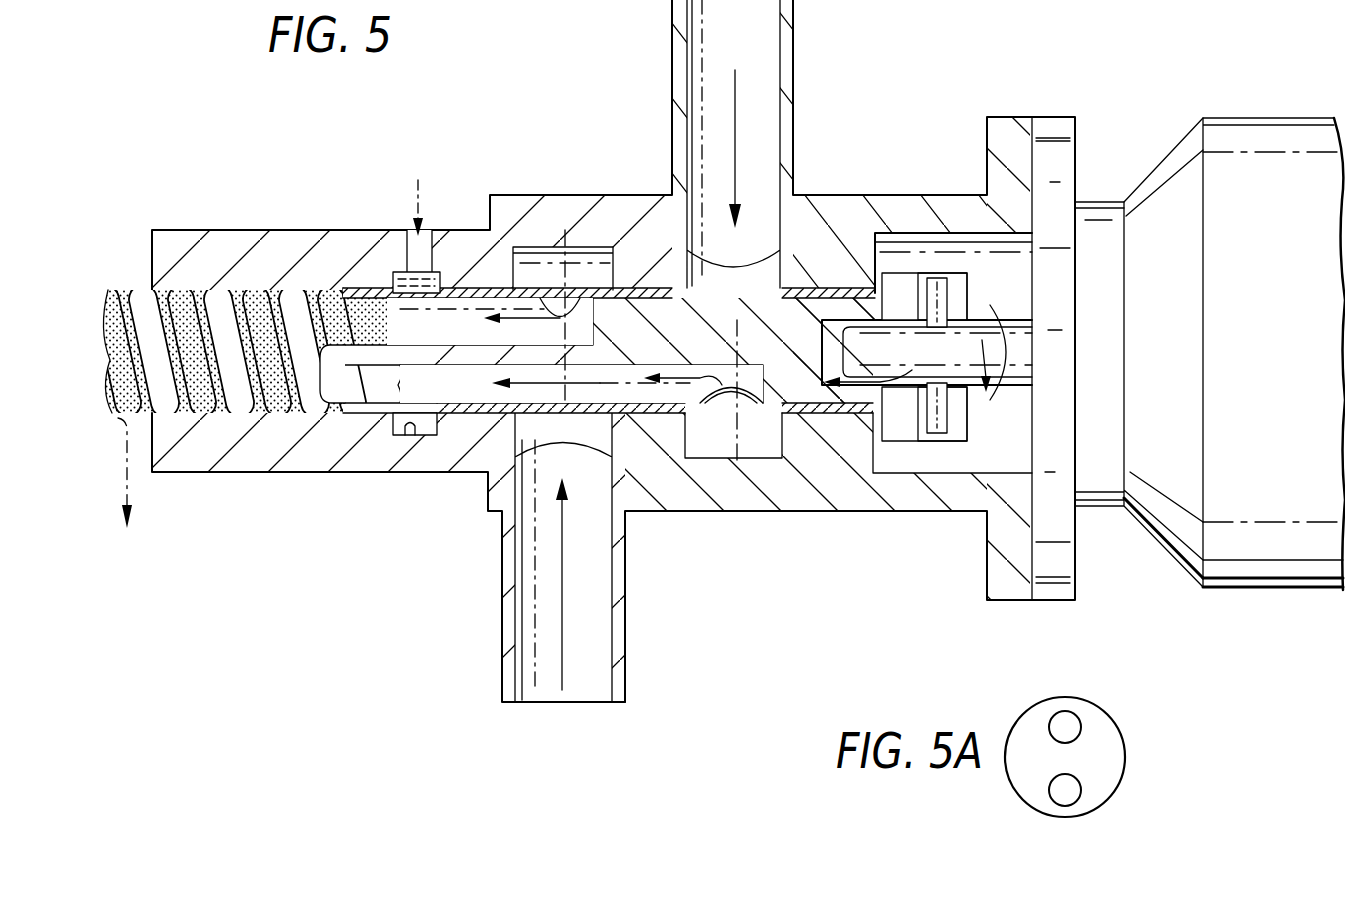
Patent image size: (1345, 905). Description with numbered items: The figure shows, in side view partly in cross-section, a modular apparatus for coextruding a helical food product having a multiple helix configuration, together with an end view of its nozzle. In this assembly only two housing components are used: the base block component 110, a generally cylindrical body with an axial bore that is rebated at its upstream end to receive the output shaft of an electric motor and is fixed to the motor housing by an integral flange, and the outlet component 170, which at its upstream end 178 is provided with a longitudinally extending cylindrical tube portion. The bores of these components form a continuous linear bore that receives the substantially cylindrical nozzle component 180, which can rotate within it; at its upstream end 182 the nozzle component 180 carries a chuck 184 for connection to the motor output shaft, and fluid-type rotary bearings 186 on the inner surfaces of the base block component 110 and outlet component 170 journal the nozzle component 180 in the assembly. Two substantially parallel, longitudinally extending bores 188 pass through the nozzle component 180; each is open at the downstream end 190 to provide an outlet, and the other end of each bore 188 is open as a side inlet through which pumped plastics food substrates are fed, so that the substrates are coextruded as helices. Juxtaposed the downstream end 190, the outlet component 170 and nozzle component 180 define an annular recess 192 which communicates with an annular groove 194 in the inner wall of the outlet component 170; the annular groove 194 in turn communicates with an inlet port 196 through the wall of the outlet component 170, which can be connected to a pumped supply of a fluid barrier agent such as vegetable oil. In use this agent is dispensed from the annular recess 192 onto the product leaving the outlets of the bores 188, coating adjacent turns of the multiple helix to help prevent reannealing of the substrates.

The base block component 110 is at (858, 497).
The outlet component 170 is at (333, 248).
The upstream end 178 is at (145, 252).
The nozzle component 180 is at (415, 425).
The upstream end 182 is at (912, 290).
The chuck 184 is at (904, 400).
The rotary bearings 186 is at (495, 292).
The bores 188 is at (460, 378).
The downstream end 190 is at (343, 352).
The annular recess 192 is at (565, 312).
The annular groove 194 is at (418, 435).
The inlet port 196 is at (412, 205).